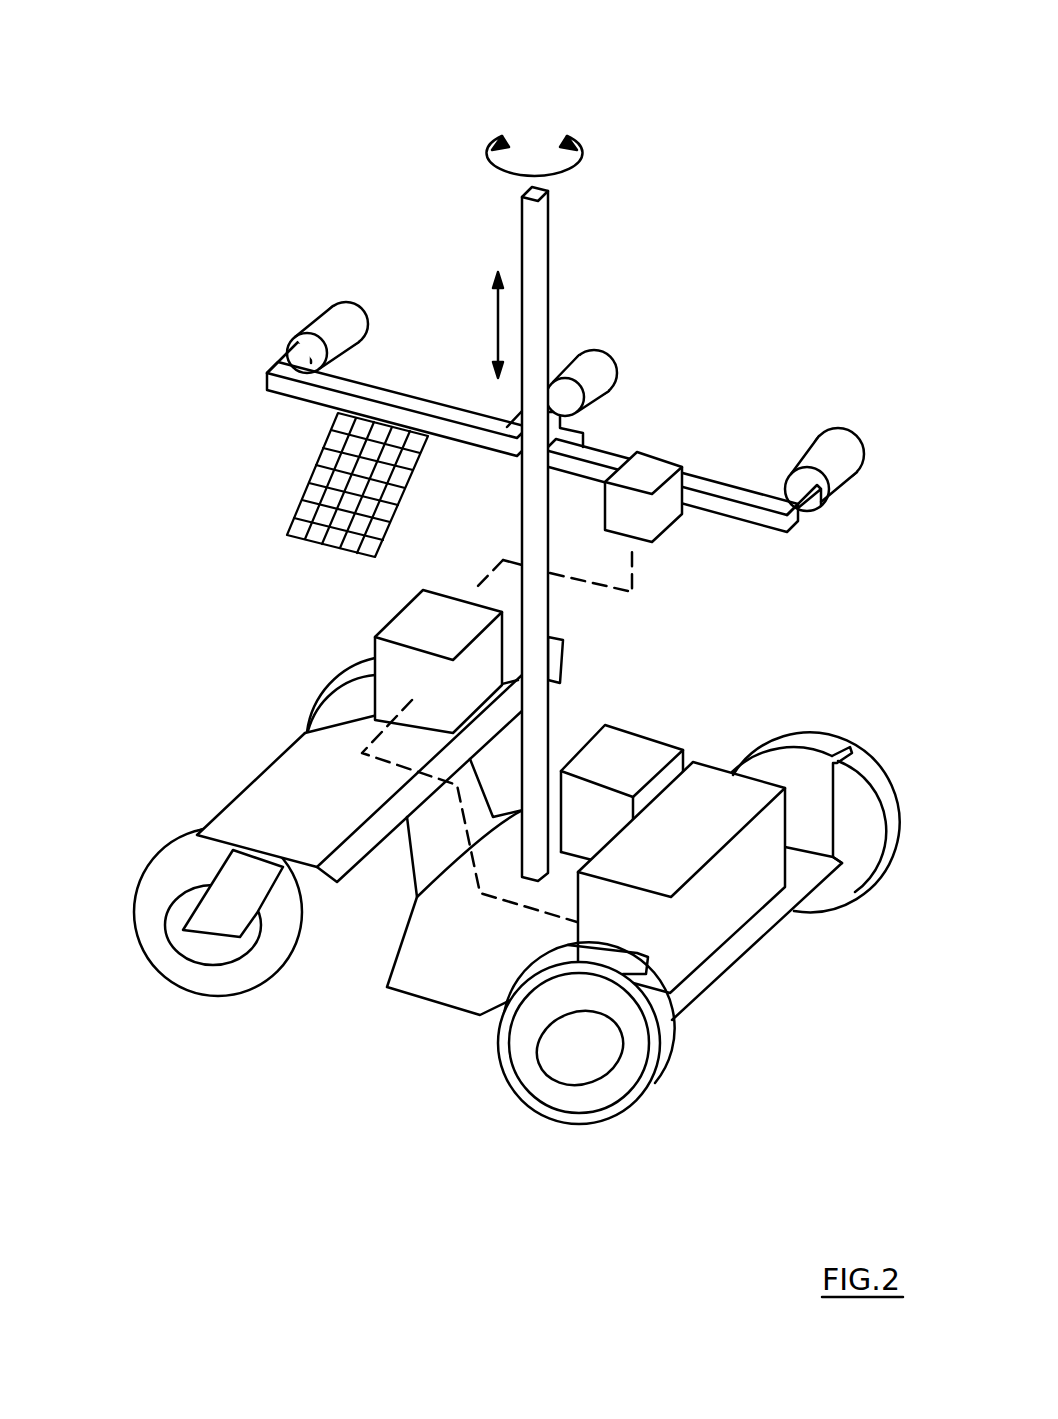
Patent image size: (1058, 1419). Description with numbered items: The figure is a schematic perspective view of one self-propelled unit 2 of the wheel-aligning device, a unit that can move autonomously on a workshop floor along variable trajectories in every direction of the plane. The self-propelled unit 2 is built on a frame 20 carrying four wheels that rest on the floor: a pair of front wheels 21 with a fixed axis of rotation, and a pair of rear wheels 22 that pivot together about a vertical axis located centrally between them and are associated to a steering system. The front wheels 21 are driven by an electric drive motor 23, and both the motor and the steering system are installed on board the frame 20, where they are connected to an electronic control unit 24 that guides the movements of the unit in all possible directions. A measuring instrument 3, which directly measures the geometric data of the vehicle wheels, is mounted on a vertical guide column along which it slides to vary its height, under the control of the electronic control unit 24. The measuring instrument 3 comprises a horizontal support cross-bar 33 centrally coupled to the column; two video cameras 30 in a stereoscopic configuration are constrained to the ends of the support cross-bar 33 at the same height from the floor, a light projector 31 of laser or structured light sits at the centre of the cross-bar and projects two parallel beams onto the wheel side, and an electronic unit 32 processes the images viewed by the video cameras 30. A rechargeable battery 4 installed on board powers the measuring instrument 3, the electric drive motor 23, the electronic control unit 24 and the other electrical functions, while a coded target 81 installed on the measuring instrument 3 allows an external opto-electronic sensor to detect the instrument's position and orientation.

The self-propelled unit 2 is at (386, 456).
The measuring instrument 3 is at (671, 417).
The rechargeable battery 4 is at (633, 753).
The frame 20 is at (433, 975).
The front wheels 21 is at (562, 1095).
The rear wheels 22 is at (317, 683).
The electric drive motor 23 is at (690, 930).
The electronic control unit 24 is at (398, 632).
The video cameras 30 is at (318, 323).
The light projector 31 is at (591, 371).
The electronic unit 32 is at (667, 513).
The support cross-bar 33 is at (428, 412).
The coded target 81 is at (320, 480).